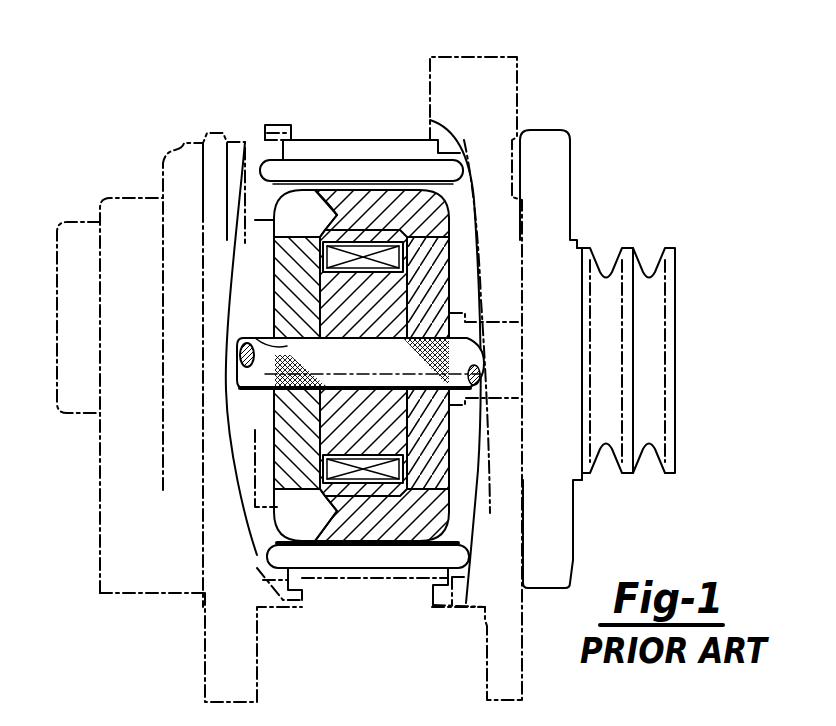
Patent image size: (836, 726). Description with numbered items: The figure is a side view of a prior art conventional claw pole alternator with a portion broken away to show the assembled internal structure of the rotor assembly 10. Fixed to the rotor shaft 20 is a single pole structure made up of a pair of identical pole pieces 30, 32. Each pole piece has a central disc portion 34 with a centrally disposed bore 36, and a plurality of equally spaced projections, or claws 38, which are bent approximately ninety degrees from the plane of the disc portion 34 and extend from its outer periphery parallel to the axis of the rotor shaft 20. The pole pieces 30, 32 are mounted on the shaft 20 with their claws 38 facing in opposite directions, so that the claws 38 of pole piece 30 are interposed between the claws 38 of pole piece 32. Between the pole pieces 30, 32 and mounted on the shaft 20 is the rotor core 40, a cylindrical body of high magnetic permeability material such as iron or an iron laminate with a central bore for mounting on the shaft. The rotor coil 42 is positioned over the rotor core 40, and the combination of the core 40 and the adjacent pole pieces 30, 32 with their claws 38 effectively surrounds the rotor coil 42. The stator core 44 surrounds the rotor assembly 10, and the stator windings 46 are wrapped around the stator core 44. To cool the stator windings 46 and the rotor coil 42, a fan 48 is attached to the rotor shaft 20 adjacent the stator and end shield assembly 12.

The rotor assembly 10 is at (262, 405).
The stator and end shield assembly 12 is at (520, 68).
The rotor shaft 20 is at (366, 368).
The pole piece 30 is at (276, 212).
The pole piece 32 is at (451, 218).
The central disc portion 34 is at (292, 262).
The bore 36 is at (274, 340).
The claws 38 is at (352, 248).
The rotor core 40 is at (390, 442).
The rotor coil 42 is at (366, 222).
The stator core 44 is at (315, 575).
The stator windings 46 is at (436, 550).
The fan 48 is at (573, 563).